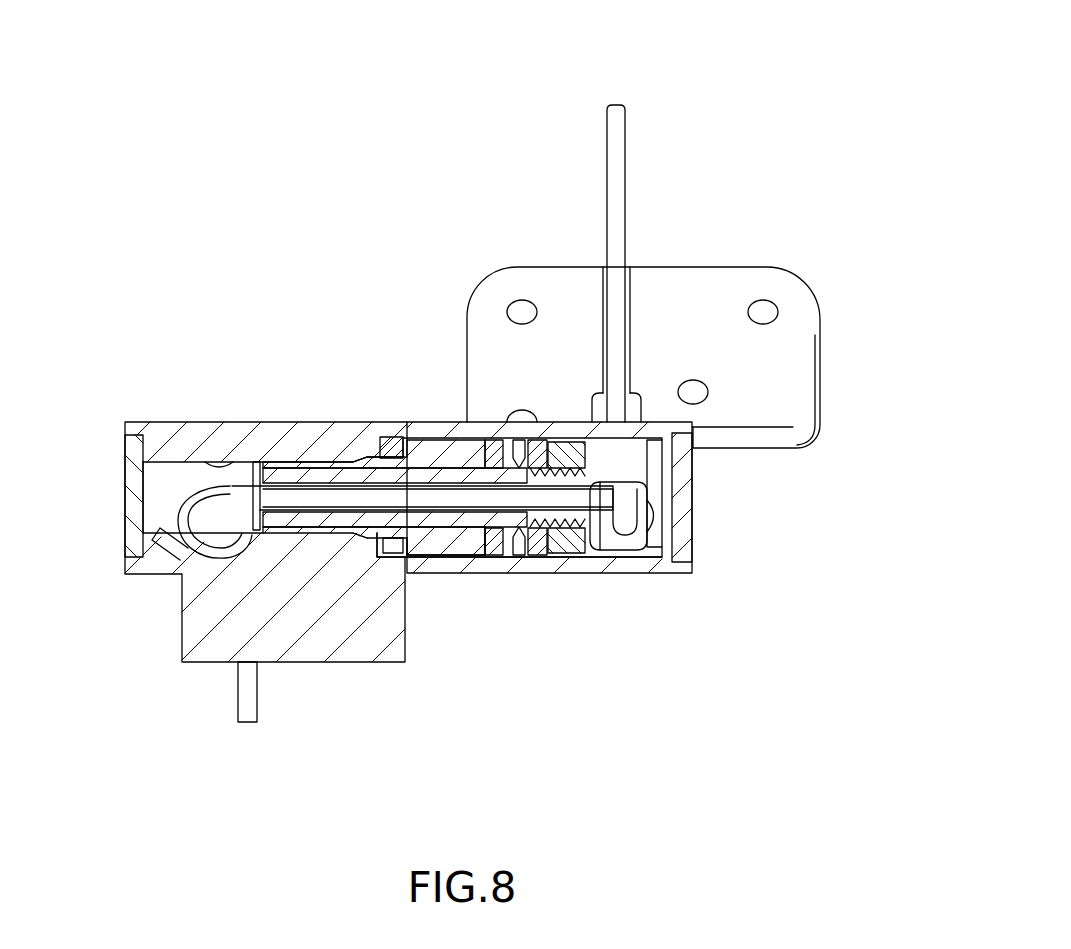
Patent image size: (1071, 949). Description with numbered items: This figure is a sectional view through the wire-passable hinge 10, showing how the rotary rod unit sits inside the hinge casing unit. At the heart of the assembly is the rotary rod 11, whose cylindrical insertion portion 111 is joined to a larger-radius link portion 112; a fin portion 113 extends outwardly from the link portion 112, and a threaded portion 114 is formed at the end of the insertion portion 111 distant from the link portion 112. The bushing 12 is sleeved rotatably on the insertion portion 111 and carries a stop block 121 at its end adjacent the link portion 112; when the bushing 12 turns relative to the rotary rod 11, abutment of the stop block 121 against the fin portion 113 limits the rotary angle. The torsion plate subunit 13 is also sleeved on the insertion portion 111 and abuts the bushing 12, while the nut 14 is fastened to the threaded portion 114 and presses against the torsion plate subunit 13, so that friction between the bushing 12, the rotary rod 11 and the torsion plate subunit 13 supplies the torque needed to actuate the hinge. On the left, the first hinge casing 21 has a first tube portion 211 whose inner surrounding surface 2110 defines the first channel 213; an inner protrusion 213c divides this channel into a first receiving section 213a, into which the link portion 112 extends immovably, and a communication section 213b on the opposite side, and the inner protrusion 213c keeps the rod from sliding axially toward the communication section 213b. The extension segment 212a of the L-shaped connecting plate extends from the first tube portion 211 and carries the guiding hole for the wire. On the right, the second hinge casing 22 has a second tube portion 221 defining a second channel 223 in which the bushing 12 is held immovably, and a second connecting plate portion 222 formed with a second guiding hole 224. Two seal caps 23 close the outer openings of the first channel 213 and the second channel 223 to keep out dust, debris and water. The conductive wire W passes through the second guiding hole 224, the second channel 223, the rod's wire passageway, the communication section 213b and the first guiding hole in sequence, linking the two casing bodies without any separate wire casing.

The wire-passable hinge 10 is at (360, 252).
The rotary rod 11 is at (317, 525).
The insertion portion 111 is at (440, 520).
The link portion 112 is at (375, 525).
The fin portion 113 is at (385, 555).
The threaded portion 114 is at (565, 440).
The bushing 12 is at (465, 530).
The torsion plate subunit 13 is at (520, 530).
The nut 14 is at (580, 560).
The stop block 121 is at (393, 440).
The first hinge casing 21 is at (112, 421).
The first tube portion 211 is at (192, 422).
The extension segment 212a is at (180, 625).
The first channel 213 is at (167, 510).
The first receiving section 213a is at (327, 464).
The communication section 213b is at (175, 485).
The inner protrusion 213c is at (256, 468).
The inner surrounding surface 2110 is at (229, 463).
The second hinge casing 22 is at (696, 582).
The second tube portion 221 is at (637, 575).
The second connecting plate portion 222 is at (822, 345).
The second channel 223 is at (628, 470).
The second guiding hole 224 is at (633, 308).
The seal caps 23 is at (125, 470).
The conductive wire W is at (615, 100).